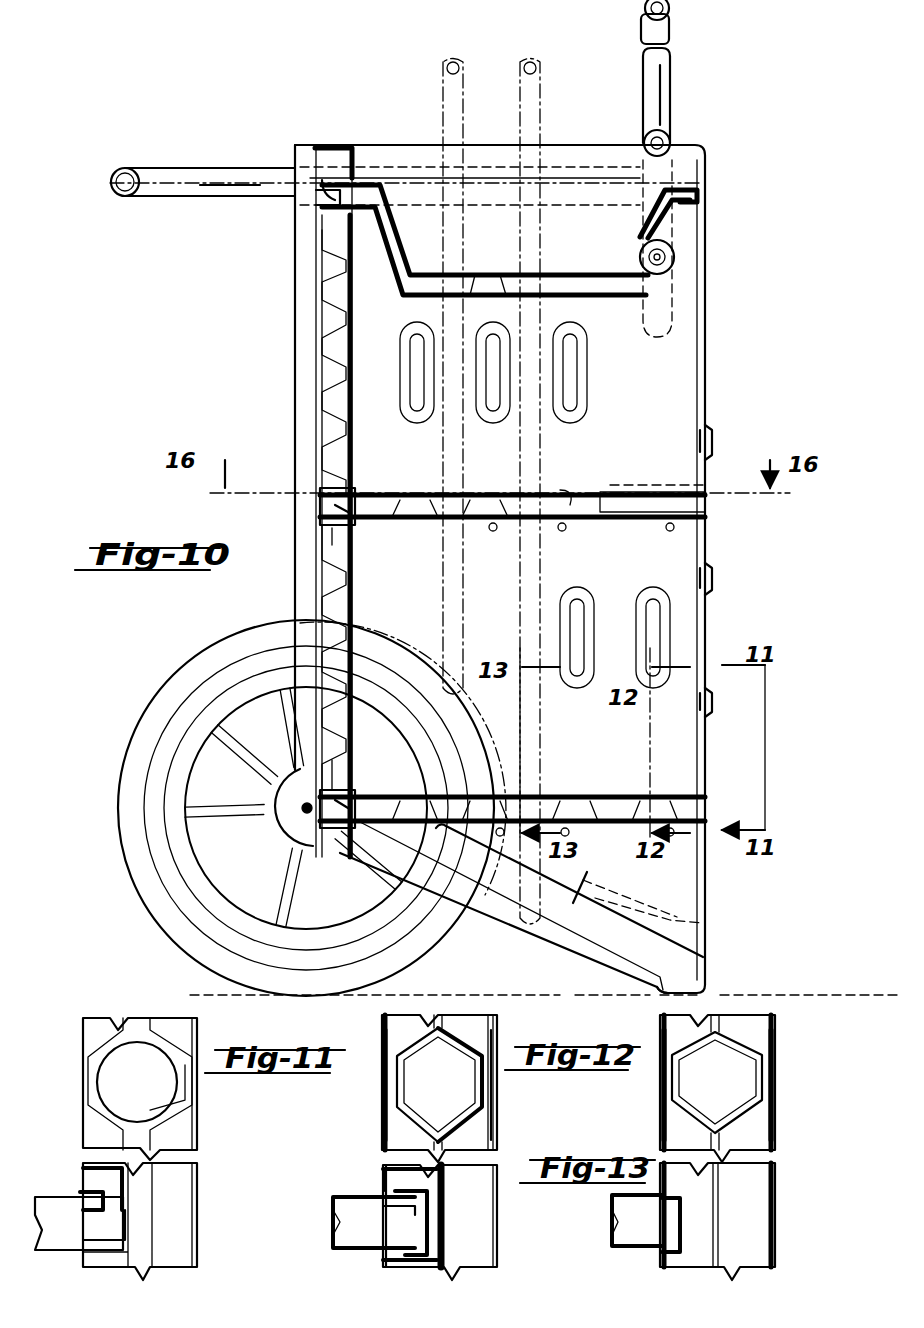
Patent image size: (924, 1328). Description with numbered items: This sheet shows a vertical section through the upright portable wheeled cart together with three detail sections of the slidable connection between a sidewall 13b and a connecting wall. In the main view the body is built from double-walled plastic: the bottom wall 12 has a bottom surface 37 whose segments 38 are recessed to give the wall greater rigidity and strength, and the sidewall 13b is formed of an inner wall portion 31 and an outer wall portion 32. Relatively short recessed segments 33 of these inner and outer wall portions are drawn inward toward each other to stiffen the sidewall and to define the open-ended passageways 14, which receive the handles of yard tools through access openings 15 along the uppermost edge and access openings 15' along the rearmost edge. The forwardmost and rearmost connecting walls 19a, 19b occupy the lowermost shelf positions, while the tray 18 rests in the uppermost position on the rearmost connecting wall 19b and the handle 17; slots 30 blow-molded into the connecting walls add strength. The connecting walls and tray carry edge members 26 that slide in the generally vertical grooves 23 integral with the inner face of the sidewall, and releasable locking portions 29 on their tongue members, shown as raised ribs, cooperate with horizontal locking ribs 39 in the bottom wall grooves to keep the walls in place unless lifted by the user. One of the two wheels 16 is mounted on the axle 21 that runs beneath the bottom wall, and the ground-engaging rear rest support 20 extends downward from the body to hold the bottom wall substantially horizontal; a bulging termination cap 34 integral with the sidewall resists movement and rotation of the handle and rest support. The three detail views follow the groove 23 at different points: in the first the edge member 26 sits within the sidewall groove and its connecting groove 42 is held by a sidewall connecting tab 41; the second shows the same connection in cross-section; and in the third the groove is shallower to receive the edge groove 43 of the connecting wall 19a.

In FIG. 10, the bottom wall 12 is at (312, 397).
In FIG. 10, the sidewall 13b is at (660, 368).
In FIG. 11, the sidewall 13b is at (115, 1012).
In FIG. 12, the sidewall 13b is at (458, 1010).
In FIG. 13, the sidewall 13b is at (778, 1010).
In FIG. 12, the open-ended passageways 14 is at (470, 1087).
In FIG. 13, the open-ended passageways 14 is at (742, 1066).
In FIG. 10, the access openings 15 is at (725, 565).
In FIG. 10, the access openings 15' is at (491, 492).
In FIG. 11, the access openings 15' is at (164, 1084).
In FIG. 10, the wheels 16 is at (160, 708).
In FIG. 10, the handle 17 is at (648, 62).
In FIG. 10, the tray 18 is at (590, 245).
In FIG. 10, the forwardmost connecting wall 19a is at (555, 790).
In FIG. 11, the forwardmost connecting wall 19a is at (48, 1235).
In FIG. 12, the forwardmost connecting wall 19a is at (330, 1220).
In FIG. 13, the forwardmost connecting wall 19a is at (608, 1218).
In FIG. 10, the rearmost connecting wall 19b is at (410, 490).
In FIG. 10, the rear rest support 20 is at (200, 180).
In FIG. 10, the axle 21 is at (300, 812).
In FIG. 10, the grooves 23 is at (572, 495).
In FIG. 12, the grooves 23 is at (432, 1206).
In FIG. 13, the grooves 23 is at (700, 1214).
In FIG. 11, the edge members 26 is at (118, 1220).
In FIG. 12, the edge members 26 is at (400, 1260).
In FIG. 10, the releasable locking portions 29 is at (352, 522).
In FIG. 10, the slots 30 is at (480, 520).
In FIG. 12, the inner wall portion 31 is at (384, 1110).
In FIG. 13, the inner wall portion 31 is at (660, 1088).
In FIG. 12, the outer wall portion 32 is at (497, 1115).
In FIG. 13, the outer wall portion 32 is at (775, 1090).
In FIG. 10, the recessed segments 33 is at (565, 412).
In FIG. 10, the bulging termination cap 34 is at (678, 312).
In FIG. 10, the bottom surface 37 is at (318, 250).
In FIG. 10, the recessed segments 38 is at (330, 352).
In FIG. 10, the releasable locking portions 39 is at (352, 500).
In FIG. 10, the sidewall connecting tab 41 is at (608, 488).
In FIG. 11, the sidewall connecting tab 41 is at (80, 1195).
In FIG. 12, the sidewall connecting tab 41 is at (385, 1195).
In FIG. 11, the connecting groove 42 is at (75, 1213).
In FIG. 12, the connecting groove 42 is at (390, 1225).
In FIG. 13, the edge groove 43 is at (672, 1205).